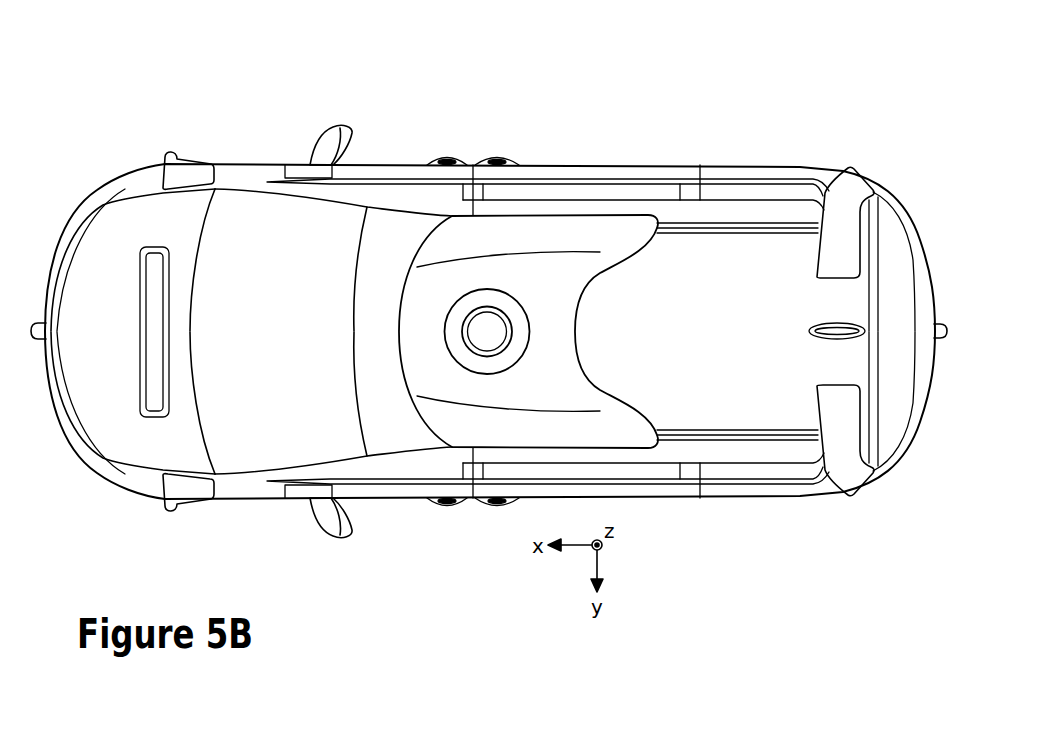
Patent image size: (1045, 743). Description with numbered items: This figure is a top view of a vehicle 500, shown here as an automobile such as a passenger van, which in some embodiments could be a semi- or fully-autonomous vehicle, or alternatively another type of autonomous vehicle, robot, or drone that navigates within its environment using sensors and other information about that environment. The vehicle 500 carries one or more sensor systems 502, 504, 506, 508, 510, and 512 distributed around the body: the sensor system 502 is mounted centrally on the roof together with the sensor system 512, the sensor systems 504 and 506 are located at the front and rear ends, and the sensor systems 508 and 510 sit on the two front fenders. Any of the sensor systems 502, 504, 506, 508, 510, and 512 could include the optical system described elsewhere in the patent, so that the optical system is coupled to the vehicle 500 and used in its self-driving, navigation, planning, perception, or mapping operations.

The vehicle 500 is at (833, 92).
The sensor system 502 is at (497, 290).
The sensor system 504 is at (38, 321).
The sensor system 506 is at (937, 322).
The sensor system 508 is at (168, 152).
The sensor system 510 is at (173, 512).
The sensor system 512 is at (445, 330).